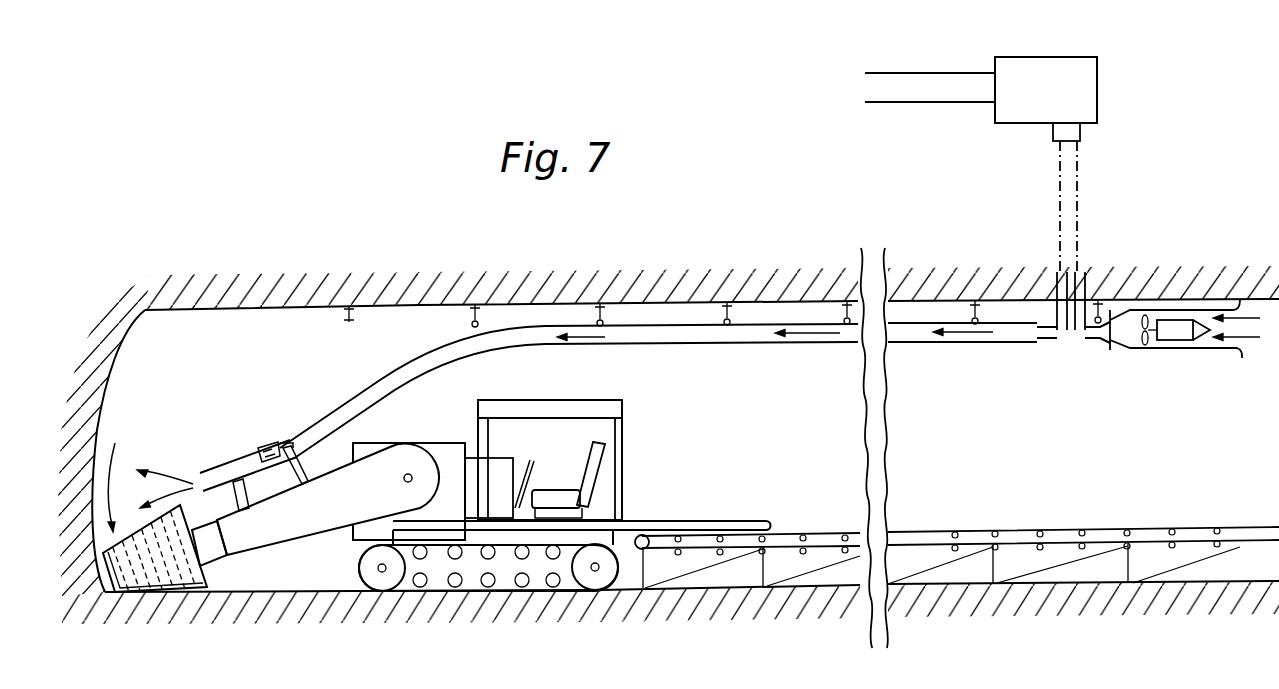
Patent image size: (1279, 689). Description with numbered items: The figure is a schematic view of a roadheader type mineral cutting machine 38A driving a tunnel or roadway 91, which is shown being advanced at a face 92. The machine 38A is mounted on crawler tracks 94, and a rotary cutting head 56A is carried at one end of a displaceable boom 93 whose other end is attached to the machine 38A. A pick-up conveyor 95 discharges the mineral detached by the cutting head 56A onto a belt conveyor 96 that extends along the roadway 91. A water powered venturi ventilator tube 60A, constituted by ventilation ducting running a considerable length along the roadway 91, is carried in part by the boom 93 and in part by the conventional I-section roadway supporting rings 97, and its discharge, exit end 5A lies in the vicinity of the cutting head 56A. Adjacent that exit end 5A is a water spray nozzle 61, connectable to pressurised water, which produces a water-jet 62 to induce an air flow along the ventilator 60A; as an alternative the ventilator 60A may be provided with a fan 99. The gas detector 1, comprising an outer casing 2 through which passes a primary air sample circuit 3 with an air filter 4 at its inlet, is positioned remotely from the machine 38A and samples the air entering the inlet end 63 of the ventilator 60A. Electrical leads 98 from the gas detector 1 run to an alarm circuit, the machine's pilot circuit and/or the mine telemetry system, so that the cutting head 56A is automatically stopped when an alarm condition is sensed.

The gas detector 1 is at (1007, 85).
The outer casing 2 is at (1098, 89).
The primary air sample circuit 3 is at (1090, 280).
The air filter 4 is at (1081, 131).
The discharge, exit end 5A is at (213, 466).
The roadheader type mineral cutting machine 38A is at (645, 473).
The rotary cutting head 56A is at (147, 470).
The venturi ventilator tube 60A is at (325, 400).
The water spray nozzle 61 is at (290, 444).
The water-jet 62 is at (258, 449).
The inlet end 63 is at (1030, 318).
The roadway 91 is at (233, 389).
The face 92 is at (112, 368).
The displaceable boom 93 is at (358, 514).
The crawler tracks 94 is at (610, 568).
The pick-up conveyor 95 is at (275, 558).
The belt conveyor 96 is at (790, 532).
The roadway supporting rings 97 is at (590, 312).
The electrical leads 98 is at (903, 102).
The fan 99 is at (1180, 332).